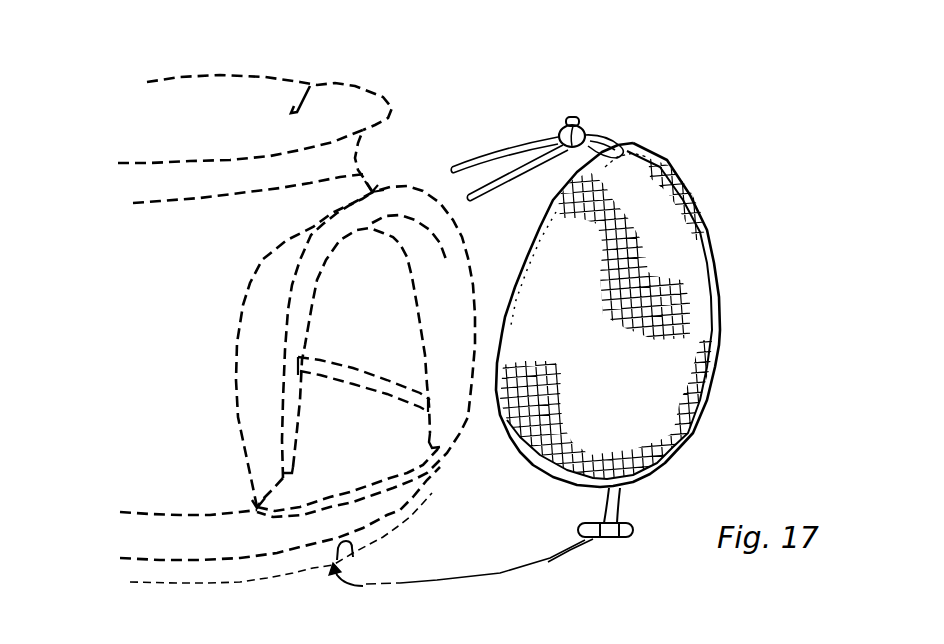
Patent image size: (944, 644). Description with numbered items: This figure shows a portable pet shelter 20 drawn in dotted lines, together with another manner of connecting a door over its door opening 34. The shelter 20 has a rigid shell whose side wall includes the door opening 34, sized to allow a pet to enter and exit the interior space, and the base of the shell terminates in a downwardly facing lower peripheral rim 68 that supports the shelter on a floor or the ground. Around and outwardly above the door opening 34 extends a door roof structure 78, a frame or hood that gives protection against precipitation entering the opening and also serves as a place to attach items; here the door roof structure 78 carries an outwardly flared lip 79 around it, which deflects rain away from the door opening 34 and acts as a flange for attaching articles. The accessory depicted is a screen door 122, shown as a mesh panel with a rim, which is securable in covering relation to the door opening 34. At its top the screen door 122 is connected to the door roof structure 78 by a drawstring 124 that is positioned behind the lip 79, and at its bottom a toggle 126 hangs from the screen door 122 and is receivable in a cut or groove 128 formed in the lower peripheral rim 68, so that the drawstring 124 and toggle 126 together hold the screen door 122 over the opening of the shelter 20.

The pet shelter 20 is at (432, 86).
The door opening 34 is at (386, 342).
The lower peripheral rim 68 is at (306, 525).
The door roof structure 78 is at (407, 187).
The outwardly flared lip 79 is at (460, 230).
The screen door 122 is at (720, 387).
The drawstring 124 is at (587, 123).
The toggle 126 is at (621, 538).
The cut or groove 128 is at (457, 563).